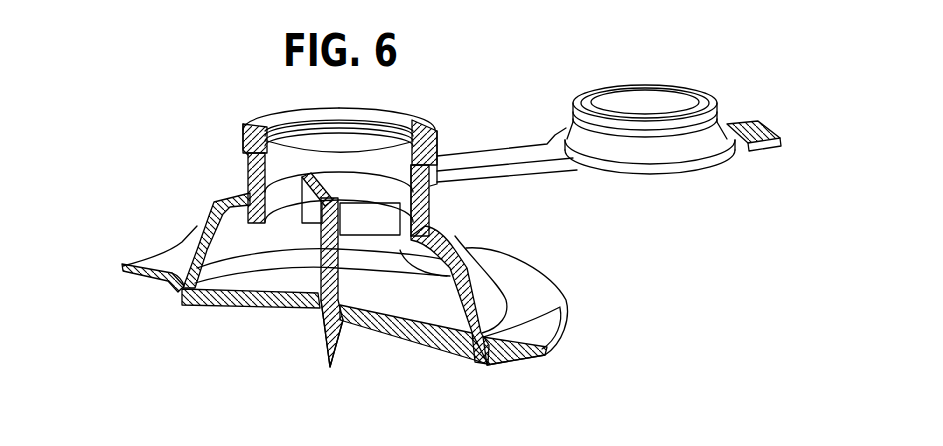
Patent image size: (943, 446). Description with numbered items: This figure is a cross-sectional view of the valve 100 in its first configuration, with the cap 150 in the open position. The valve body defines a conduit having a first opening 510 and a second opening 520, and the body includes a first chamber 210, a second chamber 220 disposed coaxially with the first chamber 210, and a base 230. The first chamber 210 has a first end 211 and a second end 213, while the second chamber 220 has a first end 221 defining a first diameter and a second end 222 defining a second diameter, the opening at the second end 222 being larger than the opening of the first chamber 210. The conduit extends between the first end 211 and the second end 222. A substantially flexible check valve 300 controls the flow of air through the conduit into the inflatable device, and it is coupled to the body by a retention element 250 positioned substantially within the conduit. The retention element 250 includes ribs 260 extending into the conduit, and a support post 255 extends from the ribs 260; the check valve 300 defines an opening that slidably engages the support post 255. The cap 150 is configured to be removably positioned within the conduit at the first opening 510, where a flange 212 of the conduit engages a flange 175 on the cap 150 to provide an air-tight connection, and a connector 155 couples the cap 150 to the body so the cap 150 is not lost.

The valve 100 is at (170, 138).
The cap 150 is at (722, 130).
The connector 155 is at (522, 178).
The flange 175 is at (568, 113).
The first chamber 210 is at (247, 171).
The first end 211 is at (251, 118).
The flange 212 is at (383, 136).
The second end 213 is at (447, 274).
The second chamber 220 is at (196, 224).
The first end 221 is at (456, 223).
The second end 222 is at (567, 305).
The base 230 is at (134, 262).
The retention element 250 is at (315, 222).
The support post 255 is at (336, 340).
The ribs 260 is at (372, 212).
The check valve 300 is at (442, 358).
The first opening 510 is at (290, 158).
The second opening 520 is at (177, 290).